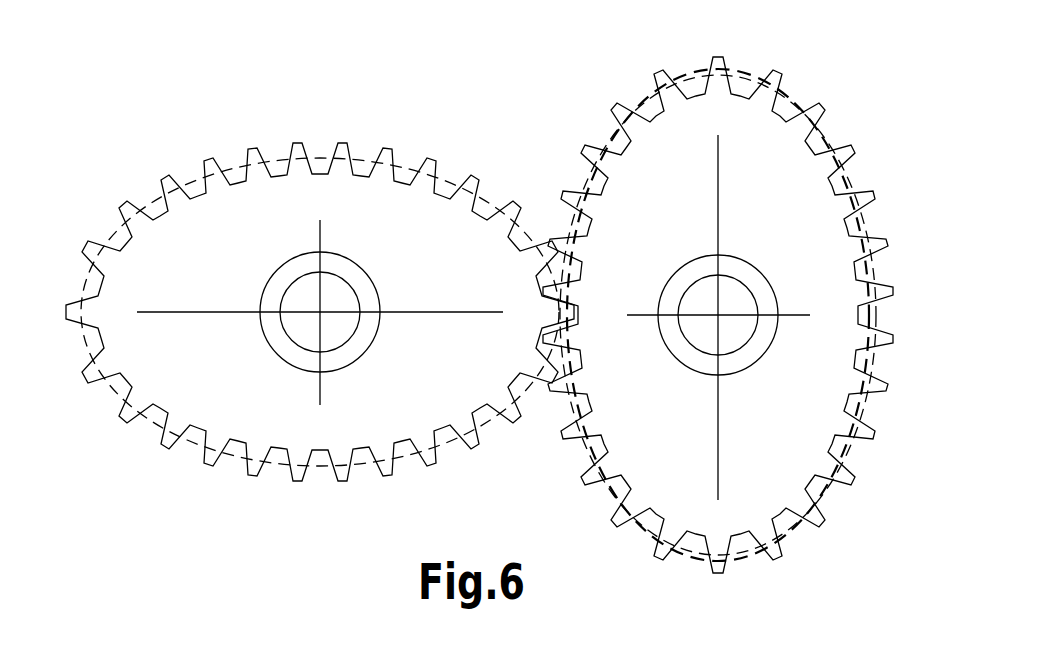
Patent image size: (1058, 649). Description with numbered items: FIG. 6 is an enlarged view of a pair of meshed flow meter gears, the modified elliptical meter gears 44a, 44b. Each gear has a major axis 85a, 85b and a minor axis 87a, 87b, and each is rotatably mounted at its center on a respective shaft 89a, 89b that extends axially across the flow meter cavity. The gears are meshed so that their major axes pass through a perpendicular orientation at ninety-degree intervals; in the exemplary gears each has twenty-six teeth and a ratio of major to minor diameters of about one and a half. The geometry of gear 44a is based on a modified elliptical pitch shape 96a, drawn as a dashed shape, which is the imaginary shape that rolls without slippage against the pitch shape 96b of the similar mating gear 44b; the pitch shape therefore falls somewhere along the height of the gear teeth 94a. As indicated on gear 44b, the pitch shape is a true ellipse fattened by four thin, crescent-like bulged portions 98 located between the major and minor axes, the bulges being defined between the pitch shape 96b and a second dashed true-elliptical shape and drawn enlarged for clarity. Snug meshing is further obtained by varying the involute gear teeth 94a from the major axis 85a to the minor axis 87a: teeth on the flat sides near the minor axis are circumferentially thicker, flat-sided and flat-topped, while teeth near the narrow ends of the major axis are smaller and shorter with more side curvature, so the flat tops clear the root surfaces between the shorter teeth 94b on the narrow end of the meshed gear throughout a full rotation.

The modified elliptical meter gear 44a is at (304, 357).
The modified elliptical meter gear 44b is at (722, 314).
The major axis 85a is at (212, 318).
The major axis 85b is at (718, 420).
The minor axis 87a is at (322, 393).
The minor axis 87b is at (793, 322).
The shaft 89a is at (362, 300).
The shaft 89b is at (760, 272).
The gear teeth 94a is at (80, 303).
The gear teeth 94b is at (733, 62).
The modified elliptical pitch shape 96a is at (226, 462).
The pitch shape 96b is at (642, 535).
The bulged portions 98 is at (585, 150).